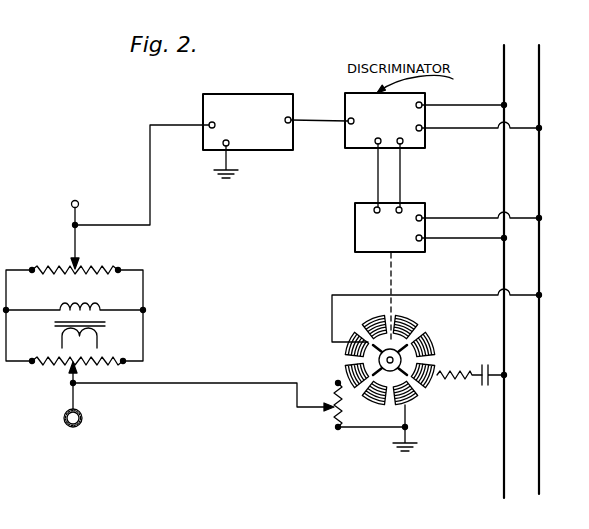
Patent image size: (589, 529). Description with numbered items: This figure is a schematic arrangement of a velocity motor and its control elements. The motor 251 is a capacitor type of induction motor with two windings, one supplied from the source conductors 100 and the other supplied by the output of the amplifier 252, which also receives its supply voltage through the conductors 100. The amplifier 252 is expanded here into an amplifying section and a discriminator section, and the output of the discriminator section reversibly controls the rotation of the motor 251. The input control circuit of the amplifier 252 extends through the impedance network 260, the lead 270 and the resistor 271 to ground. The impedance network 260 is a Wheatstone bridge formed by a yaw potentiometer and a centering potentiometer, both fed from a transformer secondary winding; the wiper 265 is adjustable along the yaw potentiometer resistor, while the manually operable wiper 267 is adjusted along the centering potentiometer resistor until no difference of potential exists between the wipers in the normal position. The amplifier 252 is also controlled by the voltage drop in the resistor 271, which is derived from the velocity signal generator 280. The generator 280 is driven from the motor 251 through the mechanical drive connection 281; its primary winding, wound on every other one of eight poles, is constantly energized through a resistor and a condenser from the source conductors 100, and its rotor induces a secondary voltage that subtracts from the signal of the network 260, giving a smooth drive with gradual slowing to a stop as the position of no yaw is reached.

The source conductors 100 is at (539, 478).
The motor 251 is at (365, 233).
The amplifier 252 is at (277, 103).
The impedance network 260 is at (138, 304).
The wiper 265 is at (72, 240).
The manually operable wiper 267 is at (68, 393).
The lead 270 is at (239, 383).
The resistor 271 is at (334, 421).
The velocity signal generator 280 is at (440, 336).
The mechanical drive connection 281 is at (393, 272).